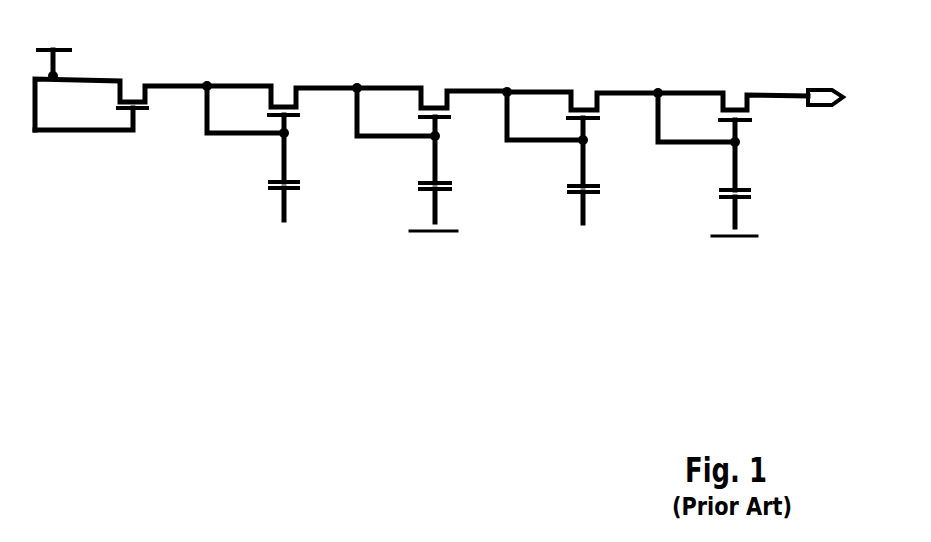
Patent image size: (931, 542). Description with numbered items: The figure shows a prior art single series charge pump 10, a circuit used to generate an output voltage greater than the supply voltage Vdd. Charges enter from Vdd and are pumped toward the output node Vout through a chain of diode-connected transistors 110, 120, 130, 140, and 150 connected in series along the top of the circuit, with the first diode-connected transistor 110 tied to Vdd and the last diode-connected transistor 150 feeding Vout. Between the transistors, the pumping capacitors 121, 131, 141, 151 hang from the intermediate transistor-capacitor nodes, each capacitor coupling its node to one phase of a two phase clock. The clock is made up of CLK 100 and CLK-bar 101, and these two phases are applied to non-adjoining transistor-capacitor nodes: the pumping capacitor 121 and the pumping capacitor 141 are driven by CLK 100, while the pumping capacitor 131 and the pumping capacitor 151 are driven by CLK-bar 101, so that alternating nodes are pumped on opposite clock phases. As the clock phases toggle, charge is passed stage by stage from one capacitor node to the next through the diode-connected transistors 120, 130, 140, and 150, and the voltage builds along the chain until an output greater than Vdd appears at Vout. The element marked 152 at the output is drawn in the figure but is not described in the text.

The single series charge pump 10 is at (413, 400).
The diode-connected transistor 110 is at (135, 76).
The diode-connected transistor 120 is at (284, 78).
The pumping capacitor 121 is at (300, 187).
The diode-connected transistor 130 is at (434, 79).
The pumping capacitor 131 is at (450, 187).
The diode-connected transistor 140 is at (580, 84).
The pumping capacitor 141 is at (600, 190).
The diode-connected transistor 150 is at (732, 86).
The pumping capacitor 151 is at (750, 195).
The output terminal (Vout) 152 is at (821, 84).
The CLK 100 is at (431, 261).
The CLK-bar 101 is at (583, 263).